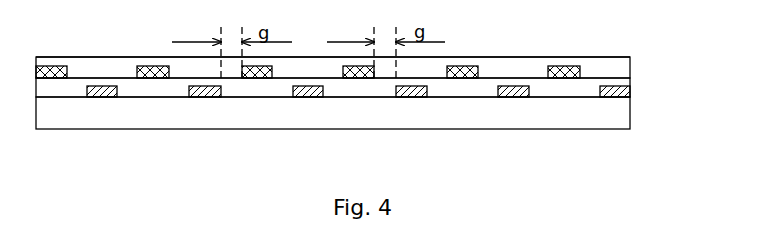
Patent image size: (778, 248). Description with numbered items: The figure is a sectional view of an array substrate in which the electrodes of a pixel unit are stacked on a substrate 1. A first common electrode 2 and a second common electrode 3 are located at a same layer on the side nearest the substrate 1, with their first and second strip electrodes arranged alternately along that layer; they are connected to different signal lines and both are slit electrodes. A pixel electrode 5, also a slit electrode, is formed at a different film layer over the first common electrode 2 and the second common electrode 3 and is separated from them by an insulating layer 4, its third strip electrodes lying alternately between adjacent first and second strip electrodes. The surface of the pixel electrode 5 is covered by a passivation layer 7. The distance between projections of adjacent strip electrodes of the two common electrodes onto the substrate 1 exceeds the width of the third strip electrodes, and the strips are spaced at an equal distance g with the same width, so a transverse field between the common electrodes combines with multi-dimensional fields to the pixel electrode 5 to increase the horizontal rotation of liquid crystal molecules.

The substrate 1 is at (613, 118).
The first common electrode 2 is at (515, 98).
The second common electrode 3 is at (632, 92).
The upper layer 4 is at (621, 81).
The pixel electrode 5 is at (567, 66).
The passivation layer 7 is at (493, 68).